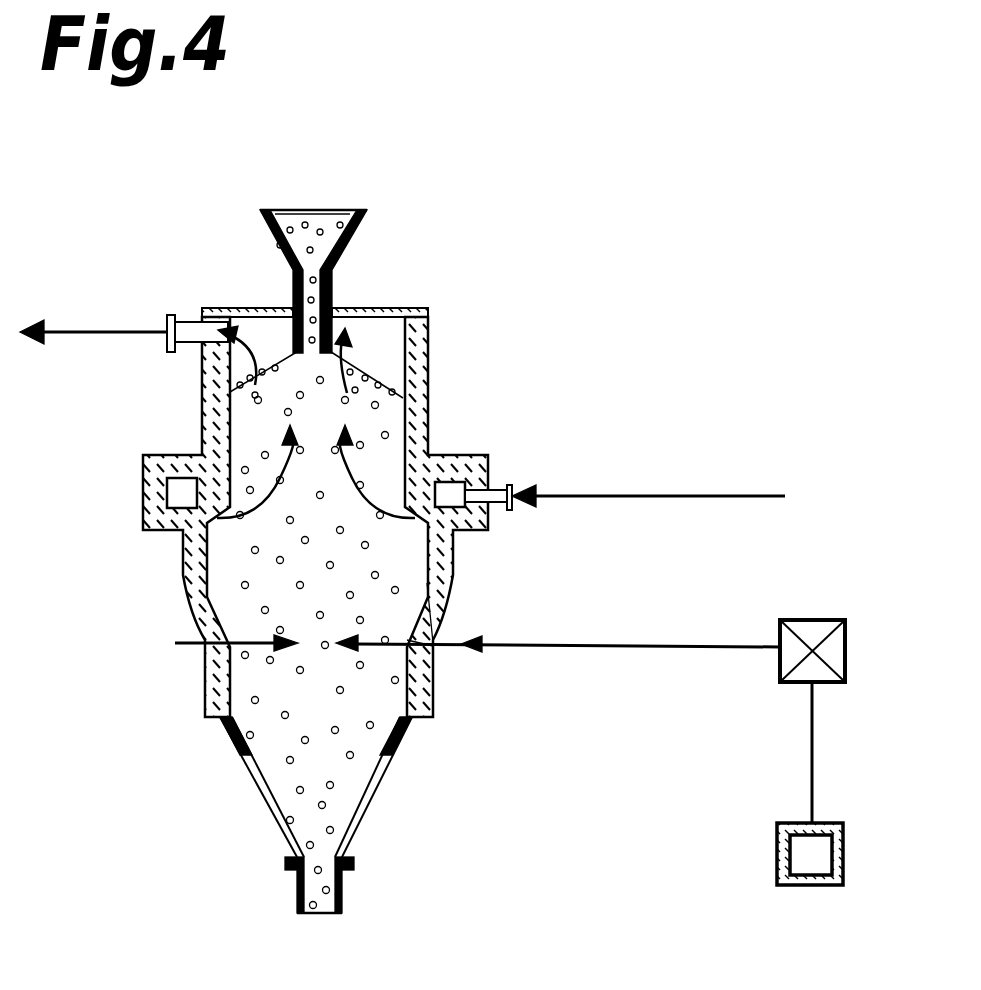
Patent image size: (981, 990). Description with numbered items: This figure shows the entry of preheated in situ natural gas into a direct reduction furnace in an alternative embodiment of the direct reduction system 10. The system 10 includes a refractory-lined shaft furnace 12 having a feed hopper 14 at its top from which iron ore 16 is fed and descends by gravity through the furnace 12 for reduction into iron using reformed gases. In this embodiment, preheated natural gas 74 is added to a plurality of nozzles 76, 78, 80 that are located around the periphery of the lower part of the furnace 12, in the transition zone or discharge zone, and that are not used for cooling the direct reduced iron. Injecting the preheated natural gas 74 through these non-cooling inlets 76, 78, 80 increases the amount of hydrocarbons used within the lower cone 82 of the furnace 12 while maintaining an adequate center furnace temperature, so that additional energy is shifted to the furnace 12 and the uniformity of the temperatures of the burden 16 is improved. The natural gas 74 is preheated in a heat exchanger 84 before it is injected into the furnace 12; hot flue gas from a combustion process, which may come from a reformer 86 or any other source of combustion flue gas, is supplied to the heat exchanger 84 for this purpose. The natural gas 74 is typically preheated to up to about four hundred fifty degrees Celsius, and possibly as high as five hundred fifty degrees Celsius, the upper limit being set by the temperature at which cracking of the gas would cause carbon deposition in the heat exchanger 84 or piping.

The system 10 is at (476, 189).
The shaft furnace 12 is at (202, 400).
The feed hopper 14 is at (270, 232).
The iron ore 16 is at (312, 214).
The preheated natural gas 74 is at (175, 642).
The nozzle 76 is at (433, 643).
The nozzle 78 is at (498, 488).
The nozzle 80 is at (433, 643).
The lower cone 82 is at (357, 828).
The heat exchanger 84 is at (806, 620).
The reformer 86 is at (808, 885).